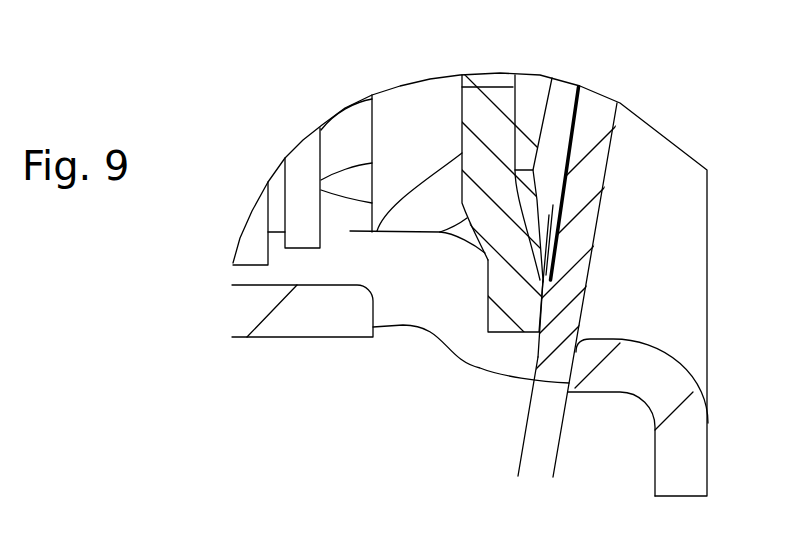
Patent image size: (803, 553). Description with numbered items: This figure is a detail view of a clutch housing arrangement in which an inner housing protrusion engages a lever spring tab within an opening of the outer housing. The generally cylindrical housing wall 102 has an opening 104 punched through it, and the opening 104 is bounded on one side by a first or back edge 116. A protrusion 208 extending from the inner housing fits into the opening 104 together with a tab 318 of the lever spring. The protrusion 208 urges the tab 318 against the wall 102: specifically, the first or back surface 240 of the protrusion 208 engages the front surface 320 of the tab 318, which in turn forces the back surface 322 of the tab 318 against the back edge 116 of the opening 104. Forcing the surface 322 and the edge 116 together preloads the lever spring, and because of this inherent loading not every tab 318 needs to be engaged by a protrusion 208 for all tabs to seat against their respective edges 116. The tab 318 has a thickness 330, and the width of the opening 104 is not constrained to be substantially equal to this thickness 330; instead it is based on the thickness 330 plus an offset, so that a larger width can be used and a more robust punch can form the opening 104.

The housing wall 102 is at (250, 305).
The opening 104 is at (390, 333).
The back edge 116 is at (580, 361).
The protrusion 208 is at (488, 107).
The back surface of protrusion 240 is at (537, 320).
The spring tab 318 is at (598, 115).
The front surface of spring tab 320 is at (546, 323).
The back surface of spring tab 322 is at (566, 362).
The thickness of tab 330 is at (605, 473).